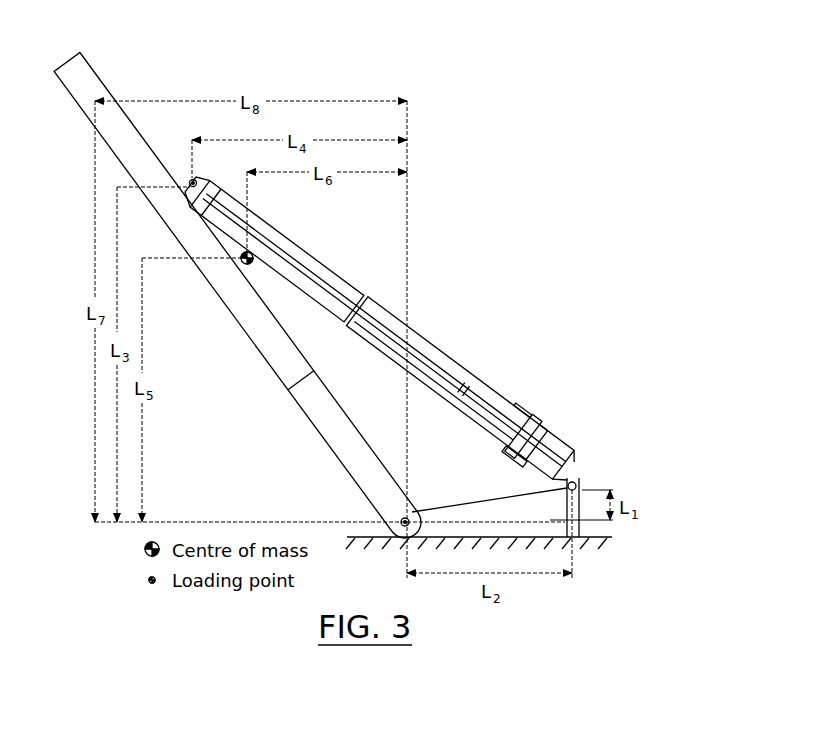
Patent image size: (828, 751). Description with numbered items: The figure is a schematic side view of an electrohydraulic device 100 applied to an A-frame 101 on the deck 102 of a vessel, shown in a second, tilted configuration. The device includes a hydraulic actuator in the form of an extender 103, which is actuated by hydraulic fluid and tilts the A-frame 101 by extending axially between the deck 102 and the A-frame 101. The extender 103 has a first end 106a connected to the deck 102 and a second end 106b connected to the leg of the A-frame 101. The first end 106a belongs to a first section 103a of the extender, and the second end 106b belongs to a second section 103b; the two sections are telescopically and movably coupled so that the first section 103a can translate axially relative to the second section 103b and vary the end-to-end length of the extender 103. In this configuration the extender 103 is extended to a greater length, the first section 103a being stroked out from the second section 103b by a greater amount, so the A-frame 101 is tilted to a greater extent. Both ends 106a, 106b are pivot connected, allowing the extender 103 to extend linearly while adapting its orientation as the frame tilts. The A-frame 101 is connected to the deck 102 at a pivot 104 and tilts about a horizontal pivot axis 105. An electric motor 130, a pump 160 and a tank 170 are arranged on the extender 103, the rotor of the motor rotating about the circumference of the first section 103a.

The electrohydraulic device 100 is at (430, 302).
The A-frame 101 is at (108, 85).
The deck 102 is at (601, 542).
The extender 103 is at (372, 338).
The first section 103a is at (462, 371).
The second section 103b is at (289, 241).
The pivot 104 is at (413, 512).
The horizontal pivot axis 105 is at (398, 521).
The first end 106a is at (578, 481).
The second end 106b is at (197, 181).
The electric motor 130 is at (543, 431).
The pump 160 is at (503, 473).
The tank 170 is at (512, 418).